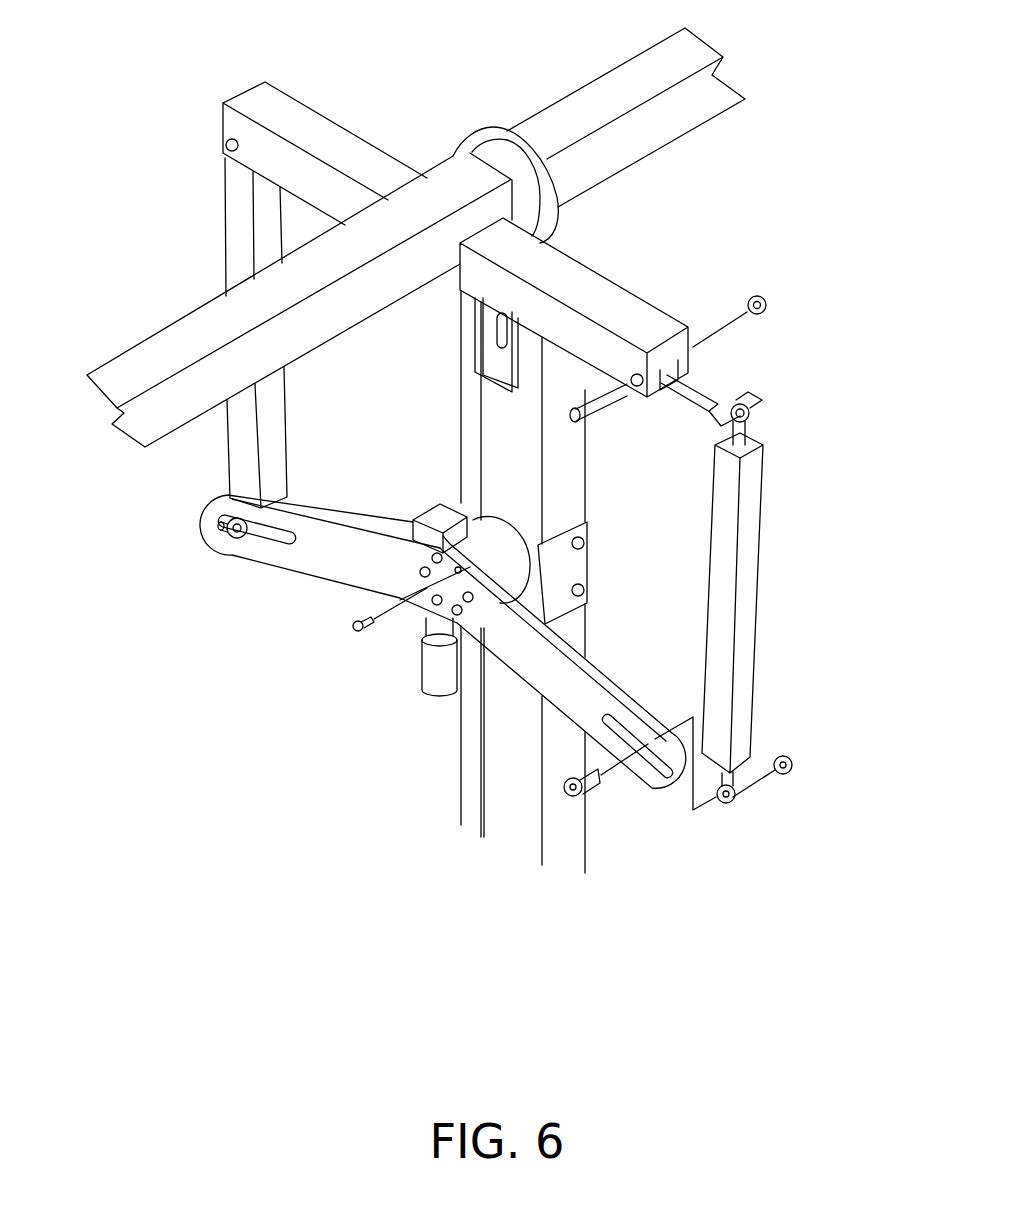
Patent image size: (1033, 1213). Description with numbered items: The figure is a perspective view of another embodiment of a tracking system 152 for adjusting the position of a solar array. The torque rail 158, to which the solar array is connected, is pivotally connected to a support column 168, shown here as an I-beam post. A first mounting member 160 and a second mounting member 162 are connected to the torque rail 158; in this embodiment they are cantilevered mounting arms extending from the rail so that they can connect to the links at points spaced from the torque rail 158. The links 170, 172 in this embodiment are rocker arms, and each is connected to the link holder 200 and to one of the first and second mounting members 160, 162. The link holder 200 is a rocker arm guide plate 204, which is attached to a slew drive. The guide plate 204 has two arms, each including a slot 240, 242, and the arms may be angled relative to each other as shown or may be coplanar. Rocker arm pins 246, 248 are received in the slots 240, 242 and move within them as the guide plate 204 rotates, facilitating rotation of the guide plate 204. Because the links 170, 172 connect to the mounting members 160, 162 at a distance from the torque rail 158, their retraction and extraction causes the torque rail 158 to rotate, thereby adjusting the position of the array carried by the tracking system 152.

The tracking system 152 is at (760, 908).
The torque rail 158 is at (160, 358).
The first mounting member 160 is at (268, 113).
The second mounting member 162 is at (532, 258).
The support column 168 is at (518, 787).
The link 170 is at (225, 218).
The link 172 is at (737, 528).
The link holder 200 is at (318, 553).
The rocker arm guide plate 204 is at (472, 697).
The slot 240 is at (607, 732).
The slot 242 is at (263, 542).
The rocker arm pin 246 is at (583, 790).
The rocker arm pin 248 is at (222, 532).